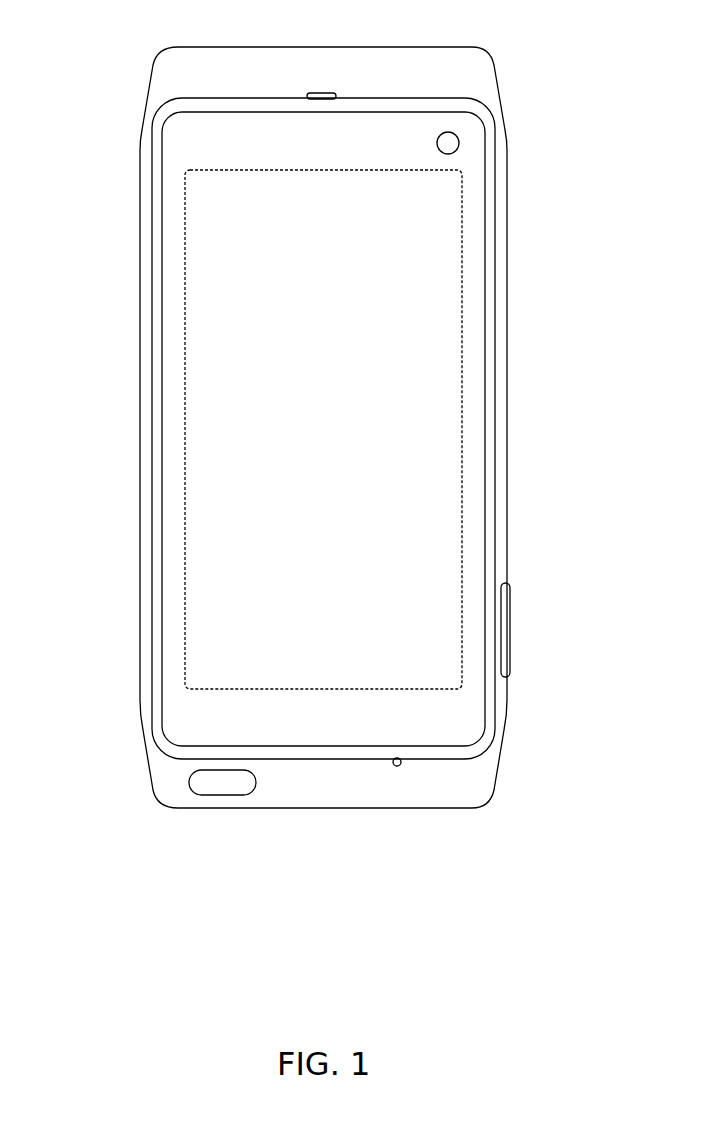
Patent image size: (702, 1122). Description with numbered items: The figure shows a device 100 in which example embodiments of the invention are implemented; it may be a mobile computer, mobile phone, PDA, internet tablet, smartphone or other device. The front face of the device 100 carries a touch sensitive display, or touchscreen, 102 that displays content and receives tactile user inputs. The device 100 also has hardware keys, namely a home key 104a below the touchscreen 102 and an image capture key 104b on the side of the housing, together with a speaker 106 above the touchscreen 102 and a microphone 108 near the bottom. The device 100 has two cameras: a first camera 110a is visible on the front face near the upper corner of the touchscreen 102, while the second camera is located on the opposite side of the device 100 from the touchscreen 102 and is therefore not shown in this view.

The device 100 is at (95, 851).
The touch sensitive display 102 is at (184, 579).
The home key 104a is at (223, 787).
The image capture key 104b is at (509, 620).
The speaker 106 is at (315, 95).
The microphone 108 is at (398, 766).
The first camera 110a is at (459, 143).